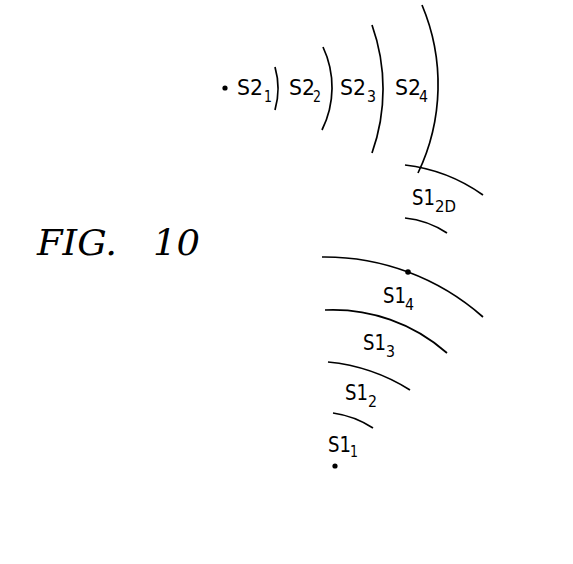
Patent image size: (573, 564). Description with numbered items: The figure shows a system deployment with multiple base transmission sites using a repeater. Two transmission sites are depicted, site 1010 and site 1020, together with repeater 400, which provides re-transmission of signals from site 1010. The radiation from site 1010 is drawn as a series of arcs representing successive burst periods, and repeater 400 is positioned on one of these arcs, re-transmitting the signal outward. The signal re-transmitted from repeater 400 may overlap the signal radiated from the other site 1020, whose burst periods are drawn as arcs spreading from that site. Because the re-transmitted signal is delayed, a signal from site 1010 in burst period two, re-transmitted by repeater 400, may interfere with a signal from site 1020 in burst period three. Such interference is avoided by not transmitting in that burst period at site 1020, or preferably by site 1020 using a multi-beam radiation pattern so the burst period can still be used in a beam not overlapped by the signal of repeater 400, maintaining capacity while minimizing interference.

The transmission site 1020 is at (220, 88).
The transmission site 1010 is at (330, 467).
The repeater 400 is at (410, 270).